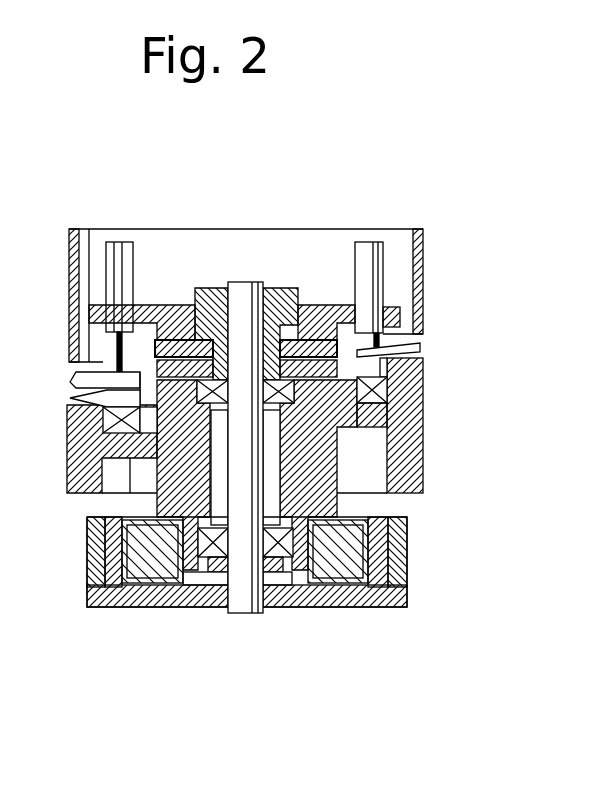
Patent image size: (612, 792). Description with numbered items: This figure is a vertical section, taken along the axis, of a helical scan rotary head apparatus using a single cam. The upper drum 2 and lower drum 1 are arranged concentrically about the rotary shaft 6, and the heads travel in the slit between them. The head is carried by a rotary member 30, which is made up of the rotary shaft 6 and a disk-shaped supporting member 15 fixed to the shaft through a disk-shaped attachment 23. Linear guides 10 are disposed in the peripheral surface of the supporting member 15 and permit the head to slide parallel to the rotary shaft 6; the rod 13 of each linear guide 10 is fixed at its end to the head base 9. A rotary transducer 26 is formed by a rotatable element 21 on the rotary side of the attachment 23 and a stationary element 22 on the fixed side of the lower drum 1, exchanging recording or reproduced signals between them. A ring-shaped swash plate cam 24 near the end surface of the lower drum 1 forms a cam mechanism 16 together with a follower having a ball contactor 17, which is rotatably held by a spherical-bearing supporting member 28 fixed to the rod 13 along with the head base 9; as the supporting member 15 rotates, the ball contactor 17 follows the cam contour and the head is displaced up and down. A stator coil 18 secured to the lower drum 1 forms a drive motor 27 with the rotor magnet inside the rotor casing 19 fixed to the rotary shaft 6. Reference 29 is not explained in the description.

The lower drum 1 is at (412, 477).
The upper drum 2 is at (422, 243).
The rotary shaft 6 is at (250, 282).
The head base 9 is at (76, 375).
The linear guide 10 is at (112, 248).
The rod 13 is at (116, 352).
The supporting member 15 is at (142, 305).
The cam mechanism 16 is at (278, 417).
The ball contactor 17 is at (70, 398).
The stator coil 18 is at (213, 668).
The rotor casing 19 is at (93, 605).
The rotatable element 21 is at (165, 305).
The stationary element 22 is at (183, 305).
The attachment 23 is at (222, 288).
The swash plate cam 24 is at (105, 440).
The rotary transducer 26 is at (247, 245).
The drive motor 27 is at (236, 616).
The supporting member 28 is at (405, 348).
The groove 29 is at (228, 382).
The rotary member 30 is at (344, 298).